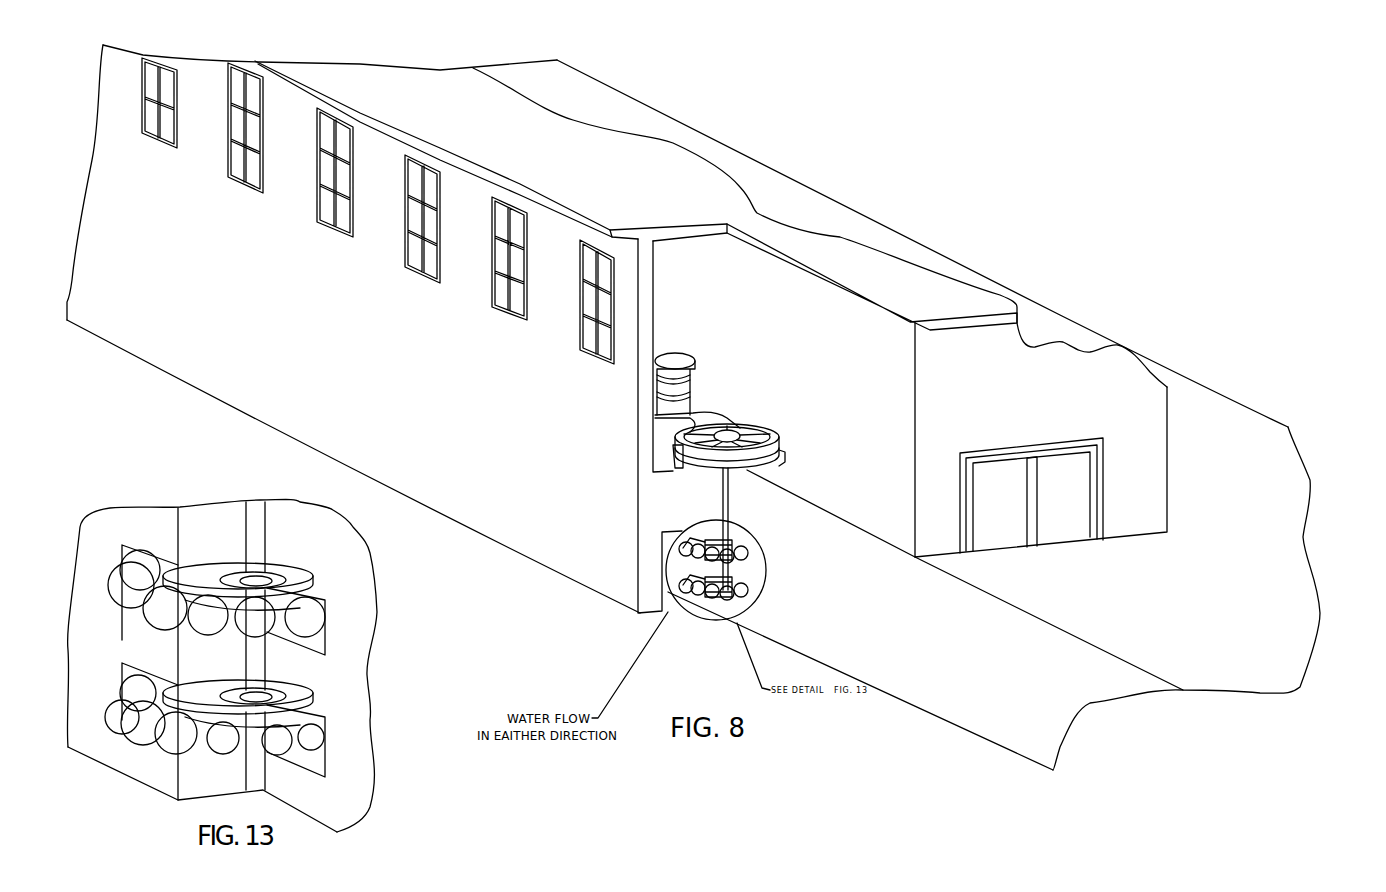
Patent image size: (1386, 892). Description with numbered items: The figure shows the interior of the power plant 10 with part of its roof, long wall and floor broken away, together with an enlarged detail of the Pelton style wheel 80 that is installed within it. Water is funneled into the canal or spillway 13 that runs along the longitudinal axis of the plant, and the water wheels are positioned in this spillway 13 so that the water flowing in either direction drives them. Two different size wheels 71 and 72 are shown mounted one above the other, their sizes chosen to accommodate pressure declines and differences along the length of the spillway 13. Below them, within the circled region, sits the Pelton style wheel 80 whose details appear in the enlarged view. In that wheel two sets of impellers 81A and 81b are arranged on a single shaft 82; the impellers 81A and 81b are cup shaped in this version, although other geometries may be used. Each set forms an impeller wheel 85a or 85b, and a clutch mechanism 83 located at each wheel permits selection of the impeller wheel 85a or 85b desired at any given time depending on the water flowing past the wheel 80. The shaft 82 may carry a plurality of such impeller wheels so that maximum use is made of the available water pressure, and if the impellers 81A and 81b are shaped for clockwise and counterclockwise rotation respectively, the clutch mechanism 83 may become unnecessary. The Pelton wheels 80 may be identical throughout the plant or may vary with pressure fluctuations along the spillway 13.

In FIG. 8, the power plant 10 is at (707, 173).
In FIG. 8, the wheel 71 is at (693, 365).
In FIG. 8, the wheel 72 is at (767, 427).
In FIG. 8, the shaft 82 is at (722, 493).
In FIG. 13, the shaft 82 is at (262, 666).
In FIG. 8, the spillway 13 is at (668, 536).
In FIG. 8, the Pelton style wheel 80 is at (730, 557).
In FIG. 13, the impeller 81A is at (153, 612).
In FIG. 13, the impeller 81b is at (170, 748).
In FIG. 13, the clutch mechanism 83 is at (270, 578).
In FIG. 13, the impeller wheel 85a is at (233, 615).
In FIG. 13, the impeller wheel 85b is at (310, 741).